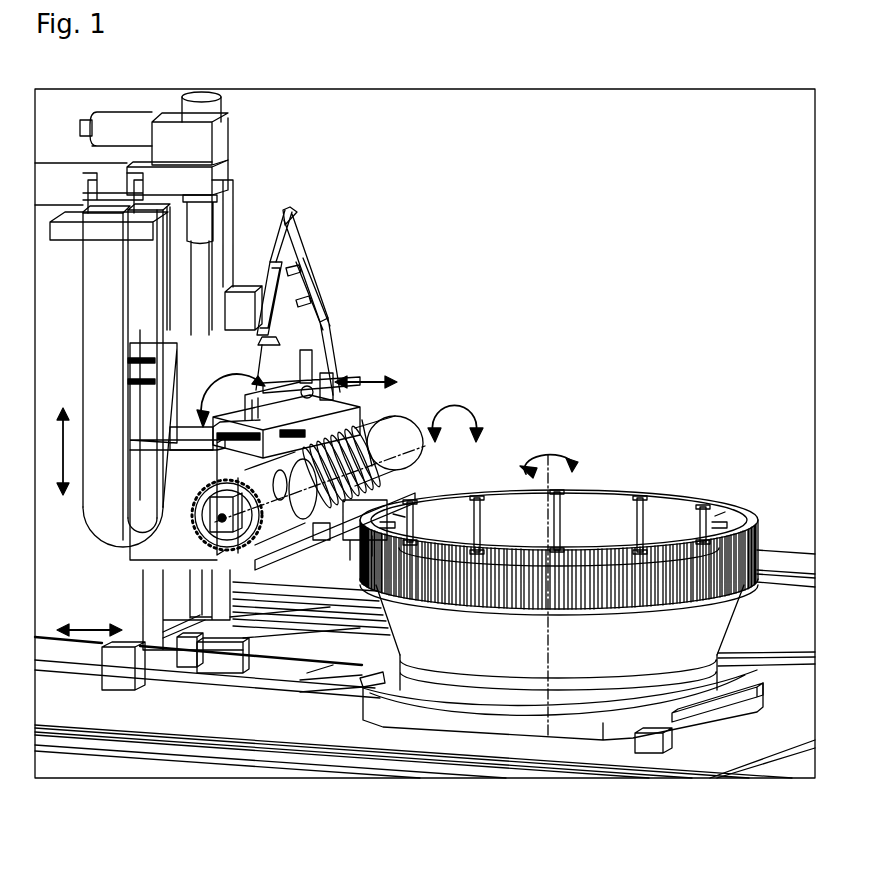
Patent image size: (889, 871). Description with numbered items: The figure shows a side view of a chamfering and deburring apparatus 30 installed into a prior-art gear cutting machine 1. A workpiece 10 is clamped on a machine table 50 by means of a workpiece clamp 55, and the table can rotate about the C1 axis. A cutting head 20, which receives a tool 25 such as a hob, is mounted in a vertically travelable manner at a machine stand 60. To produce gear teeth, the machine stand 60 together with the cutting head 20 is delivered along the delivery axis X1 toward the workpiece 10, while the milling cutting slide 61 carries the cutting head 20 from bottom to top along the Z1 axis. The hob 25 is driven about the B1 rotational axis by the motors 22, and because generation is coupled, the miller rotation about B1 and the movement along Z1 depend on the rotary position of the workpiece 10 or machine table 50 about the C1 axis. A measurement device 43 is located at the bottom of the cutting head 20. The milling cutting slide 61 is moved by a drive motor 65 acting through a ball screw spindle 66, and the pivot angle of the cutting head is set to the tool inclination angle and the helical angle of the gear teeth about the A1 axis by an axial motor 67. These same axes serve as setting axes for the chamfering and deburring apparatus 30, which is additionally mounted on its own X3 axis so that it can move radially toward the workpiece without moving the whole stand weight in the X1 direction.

The gear cutting machine 1 is at (548, 266).
The workpiece 10 is at (723, 520).
The cutting head 20 is at (357, 412).
The motors 22 is at (390, 427).
The tool 25 is at (397, 479).
The chamfering and deburring apparatus 30 is at (315, 278).
The measurement device 43 is at (344, 524).
The machine table 50 is at (378, 708).
The workpiece clamp 55 is at (707, 627).
The machine stand 60 is at (73, 554).
The milling cutting slide 61 is at (135, 560).
The drive motor 65 is at (192, 146).
The ball screw spindle 66 is at (202, 224).
The axial motor 67 is at (237, 310).
The A1 axis A1 is at (258, 362).
The B1 rotational axis B1 is at (467, 420).
The C1 axis C1 is at (553, 453).
The delivery axis X1 is at (89, 617).
The X3 axis X3 is at (366, 371).
The Z1 axis Z1 is at (53, 451).